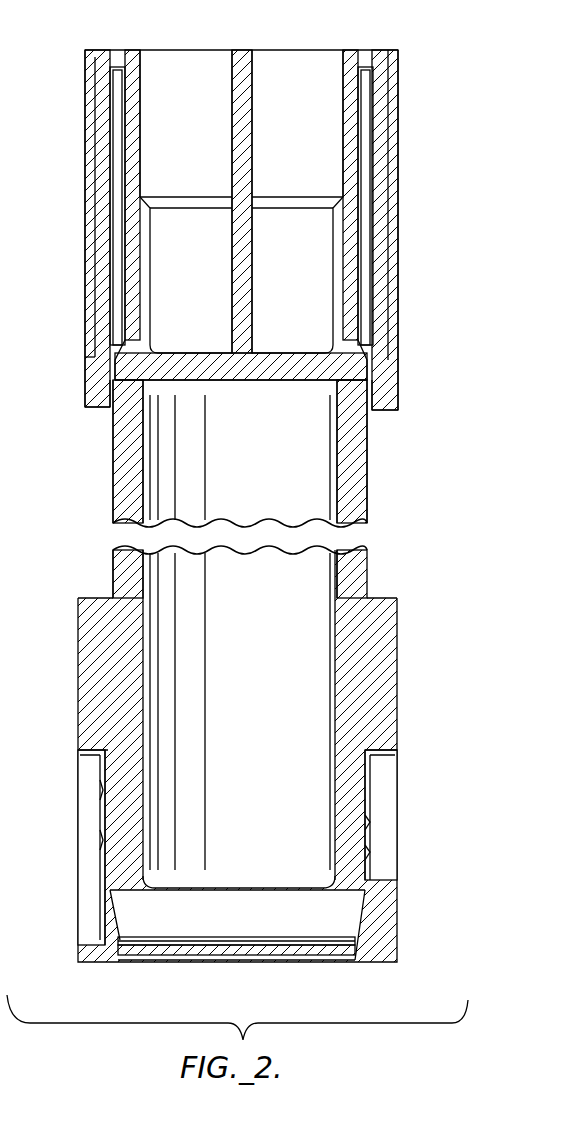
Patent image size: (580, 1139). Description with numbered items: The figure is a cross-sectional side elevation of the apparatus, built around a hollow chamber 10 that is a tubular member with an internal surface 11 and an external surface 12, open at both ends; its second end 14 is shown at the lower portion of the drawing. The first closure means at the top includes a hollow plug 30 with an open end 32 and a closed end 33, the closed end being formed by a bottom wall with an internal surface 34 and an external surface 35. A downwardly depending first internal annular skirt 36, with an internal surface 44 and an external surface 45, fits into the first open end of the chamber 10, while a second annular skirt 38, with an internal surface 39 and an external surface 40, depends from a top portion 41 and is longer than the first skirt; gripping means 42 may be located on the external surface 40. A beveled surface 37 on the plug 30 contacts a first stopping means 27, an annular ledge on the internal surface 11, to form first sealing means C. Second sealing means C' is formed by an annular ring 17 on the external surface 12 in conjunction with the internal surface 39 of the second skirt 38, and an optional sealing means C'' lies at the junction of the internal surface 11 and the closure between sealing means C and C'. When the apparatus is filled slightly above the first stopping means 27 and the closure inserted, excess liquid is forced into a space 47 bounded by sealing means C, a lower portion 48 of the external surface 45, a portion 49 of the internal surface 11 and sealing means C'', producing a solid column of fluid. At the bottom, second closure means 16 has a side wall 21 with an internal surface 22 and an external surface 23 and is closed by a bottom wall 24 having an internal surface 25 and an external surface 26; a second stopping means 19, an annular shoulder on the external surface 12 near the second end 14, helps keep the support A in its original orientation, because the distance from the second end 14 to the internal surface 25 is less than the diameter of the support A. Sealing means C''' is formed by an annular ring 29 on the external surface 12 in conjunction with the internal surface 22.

The hollow chamber 10 is at (112, 497).
The internal surface 11 is at (350, 470).
The external surface 12 is at (370, 455).
The second end 14 is at (150, 898).
The second closure means 16 is at (78, 778).
The annular ring 17 is at (372, 137).
The second stopping means 19 is at (385, 752).
The side wall 21 is at (397, 790).
The internal surface 22 is at (370, 878).
The external surface 23 is at (397, 898).
The bottom wall 24 is at (325, 962).
The internal surface 25 is at (118, 945).
The external surface 26 is at (130, 962).
The first stopping means 27 is at (352, 347).
The annular ring 29 is at (368, 850).
The plug 30 is at (143, 90).
The open end 32 is at (275, 70).
The closed end 33 is at (185, 390).
The internal surface 34 is at (180, 365).
The external surface 35 is at (200, 400).
The first internal annular skirt 36 is at (345, 290).
The beveled surface 37 is at (350, 400).
The second annular skirt 38 is at (82, 138).
The internal surface 39 is at (117, 268).
The external surface 40 is at (95, 236).
The top portion 41 is at (380, 50).
The gripping means 42 is at (80, 200).
The internal surface 44 is at (332, 75).
The external surface 45 is at (125, 178).
The space 47 is at (130, 310).
The lower portion 48 is at (335, 262).
The portion 49 is at (365, 305).
The support A is at (215, 940).
The first sealing means C is at (394, 364).
The second sealing means C' is at (411, 168).
The optional sealing means C'' is at (401, 214).
The sealing means C''' is at (416, 840).